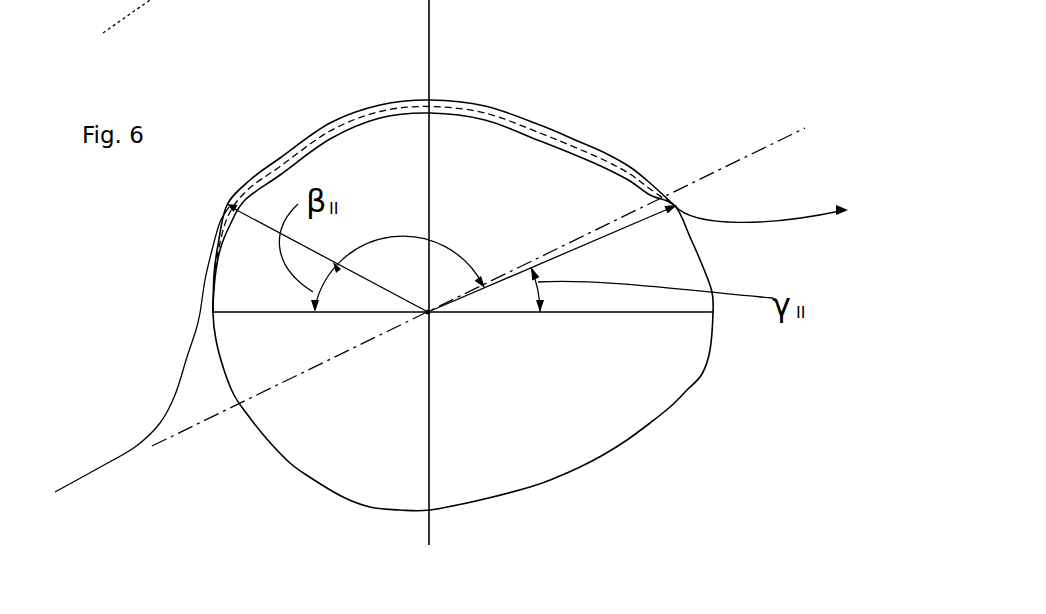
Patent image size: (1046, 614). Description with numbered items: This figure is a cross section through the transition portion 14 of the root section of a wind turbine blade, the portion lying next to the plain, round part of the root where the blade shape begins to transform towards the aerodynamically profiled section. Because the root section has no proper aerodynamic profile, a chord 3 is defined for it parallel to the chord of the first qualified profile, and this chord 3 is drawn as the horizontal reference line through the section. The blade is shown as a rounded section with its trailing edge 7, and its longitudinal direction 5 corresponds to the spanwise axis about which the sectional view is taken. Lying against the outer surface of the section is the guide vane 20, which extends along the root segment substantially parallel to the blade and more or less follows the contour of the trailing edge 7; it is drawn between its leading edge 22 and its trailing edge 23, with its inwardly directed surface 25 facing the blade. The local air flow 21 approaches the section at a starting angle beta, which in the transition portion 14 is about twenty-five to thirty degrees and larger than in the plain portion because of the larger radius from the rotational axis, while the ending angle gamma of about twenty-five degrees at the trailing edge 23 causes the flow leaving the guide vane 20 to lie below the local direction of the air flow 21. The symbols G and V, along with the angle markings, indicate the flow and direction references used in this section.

The chord 3 is at (590, 315).
The longitudinal direction 5 is at (430, 316).
The trailing edge 7 is at (720, 325).
The transition portion 14 is at (735, 523).
The guide vane 20 is at (472, 95).
The air flow 21 is at (182, 373).
The leading edge 22 is at (226, 205).
The trailing edge 23 is at (675, 206).
The inwardly directed surface 25 is at (568, 138).
The gas flow G is at (203, 290).
The direction of movement axis V is at (729, 162).